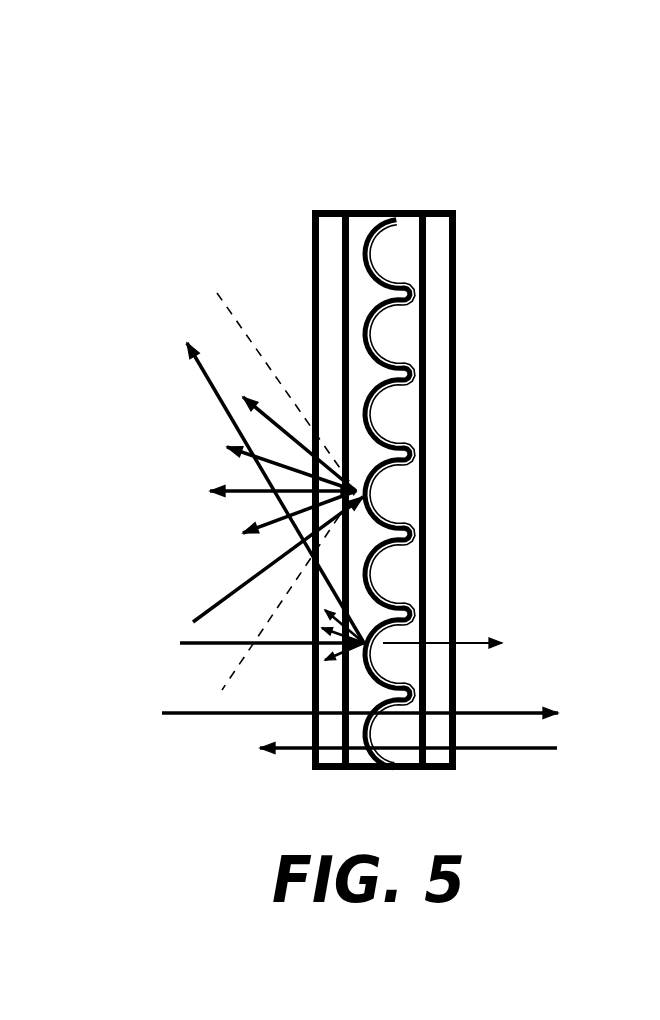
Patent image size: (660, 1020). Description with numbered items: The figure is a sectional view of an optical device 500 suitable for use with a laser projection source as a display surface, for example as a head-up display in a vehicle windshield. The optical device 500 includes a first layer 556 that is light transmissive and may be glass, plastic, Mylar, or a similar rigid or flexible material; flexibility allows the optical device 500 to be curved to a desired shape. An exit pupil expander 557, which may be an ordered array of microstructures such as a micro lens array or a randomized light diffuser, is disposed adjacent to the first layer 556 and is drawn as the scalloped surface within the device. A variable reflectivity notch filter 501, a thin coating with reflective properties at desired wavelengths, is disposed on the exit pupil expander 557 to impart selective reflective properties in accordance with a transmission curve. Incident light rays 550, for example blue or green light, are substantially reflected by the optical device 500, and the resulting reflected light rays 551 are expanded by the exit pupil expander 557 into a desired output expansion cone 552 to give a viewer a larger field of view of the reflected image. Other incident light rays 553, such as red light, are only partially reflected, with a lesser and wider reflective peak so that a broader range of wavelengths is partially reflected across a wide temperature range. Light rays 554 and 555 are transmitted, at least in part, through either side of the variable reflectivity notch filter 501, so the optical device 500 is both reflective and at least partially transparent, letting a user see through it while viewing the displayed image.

The optical device 500 is at (428, 465).
The variable reflectivity notch filter 501 is at (368, 276).
The incident light rays 550 is at (297, 550).
The reflected light rays 551 is at (267, 423).
The output expansion cone 552 is at (259, 349).
The incident light rays 553 is at (182, 643).
The light rays 554 is at (493, 750).
The light rays 555 is at (490, 711).
The first layer 556 is at (312, 232).
The exit pupil expander 557 is at (400, 343).